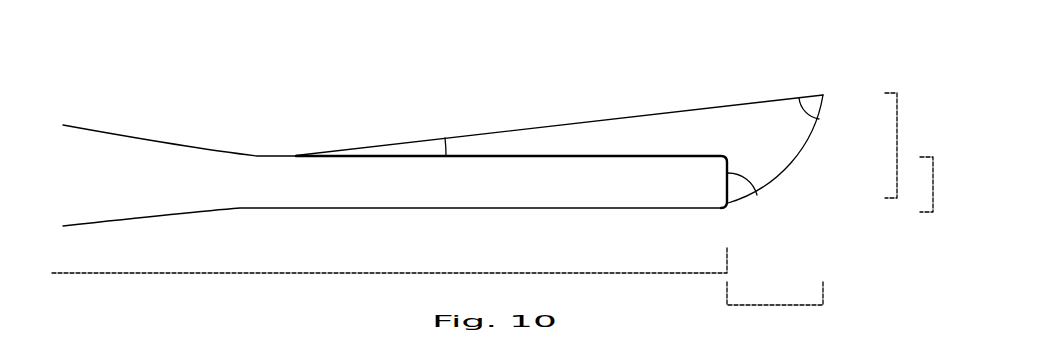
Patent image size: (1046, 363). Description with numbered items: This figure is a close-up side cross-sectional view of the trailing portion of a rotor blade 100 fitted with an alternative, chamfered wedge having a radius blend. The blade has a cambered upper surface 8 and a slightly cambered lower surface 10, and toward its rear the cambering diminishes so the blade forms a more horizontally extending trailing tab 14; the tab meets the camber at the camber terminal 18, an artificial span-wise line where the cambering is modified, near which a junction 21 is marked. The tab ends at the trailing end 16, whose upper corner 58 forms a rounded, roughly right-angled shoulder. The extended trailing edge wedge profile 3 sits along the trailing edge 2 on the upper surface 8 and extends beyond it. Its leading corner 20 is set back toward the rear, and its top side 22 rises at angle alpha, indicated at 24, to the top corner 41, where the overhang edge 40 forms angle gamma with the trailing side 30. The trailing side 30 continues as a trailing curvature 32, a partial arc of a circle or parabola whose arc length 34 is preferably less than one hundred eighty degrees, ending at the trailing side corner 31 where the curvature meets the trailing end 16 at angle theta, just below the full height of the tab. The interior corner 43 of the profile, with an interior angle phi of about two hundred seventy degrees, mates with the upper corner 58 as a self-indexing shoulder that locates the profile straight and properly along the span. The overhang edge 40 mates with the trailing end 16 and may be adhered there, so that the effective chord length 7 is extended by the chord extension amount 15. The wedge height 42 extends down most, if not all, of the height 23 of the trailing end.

The rotor blade 100 is at (380, 173).
The upper surface 8 is at (128, 133).
The lower surface 10 is at (160, 217).
The camber terminal 18 is at (257, 155).
The junction 21 is at (297, 152).
The leading corner 20 is at (307, 137).
The top side 22 is at (460, 132).
The wedge profile 3 is at (595, 138).
The angle alpha 24 is at (453, 158).
The chord length 7 is at (389, 273).
The trailing tab 14 is at (700, 190).
The upper corner 58 is at (725, 164).
The trailing end 16 is at (729, 210).
The interior corner 43 is at (726, 153).
The trailing side corner 31 is at (733, 203).
The trailing curvature 32 is at (778, 175).
The arc length 34 is at (800, 157).
The trailing side 30 is at (812, 128).
The trailing edge 2 is at (825, 93).
The top corner 41 is at (827, 95).
The overhang edge 40 is at (800, 82).
The chord extension amount 15 is at (775, 304).
The wedge height 42 is at (910, 145).
The height of trailing tab trailing end 23 is at (941, 184).